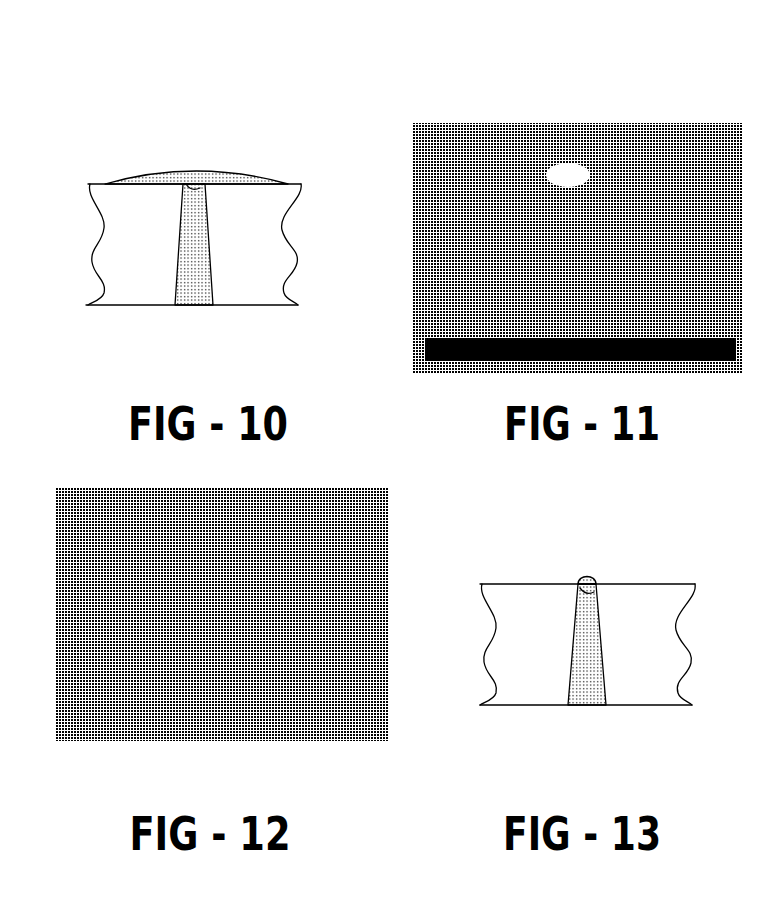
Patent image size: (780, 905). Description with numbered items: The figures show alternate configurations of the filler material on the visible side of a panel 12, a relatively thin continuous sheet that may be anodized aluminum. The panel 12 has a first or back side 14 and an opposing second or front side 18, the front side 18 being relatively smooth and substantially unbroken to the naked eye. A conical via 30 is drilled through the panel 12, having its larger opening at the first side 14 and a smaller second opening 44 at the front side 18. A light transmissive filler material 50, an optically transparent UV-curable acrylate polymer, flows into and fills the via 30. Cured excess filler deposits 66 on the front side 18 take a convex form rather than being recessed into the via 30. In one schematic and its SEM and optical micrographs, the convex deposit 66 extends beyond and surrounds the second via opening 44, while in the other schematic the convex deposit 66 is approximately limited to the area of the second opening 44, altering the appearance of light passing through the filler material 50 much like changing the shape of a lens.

In FIG. 10, the panel 12 is at (290, 280).
In FIG. 13, the panel 12 is at (683, 680).
In FIG. 10, the first side 14 is at (92, 297).
In FIG. 13, the first side 14 is at (485, 697).
In FIG. 10, the second side 18 is at (277, 176).
In FIG. 11, the second side 18 is at (468, 128).
In FIG. 12, the second side 18 is at (105, 498).
In FIG. 13, the second side 18 is at (675, 576).
In FIG. 10, the via 30 is at (203, 280).
In FIG. 13, the via 30 is at (597, 680).
In FIG. 10, the second opening 44 is at (188, 177).
In FIG. 13, the second opening 44 is at (580, 582).
In FIG. 10, the filler material 50 is at (170, 263).
In FIG. 13, the filler material 50 is at (568, 665).
In FIG. 10, the excess filler deposit 66 is at (192, 163).
In FIG. 11, the excess filler deposit 66 is at (533, 133).
In FIG. 12, the excess filler deposit 66 is at (173, 500).
In FIG. 13, the excess filler deposit 66 is at (578, 567).